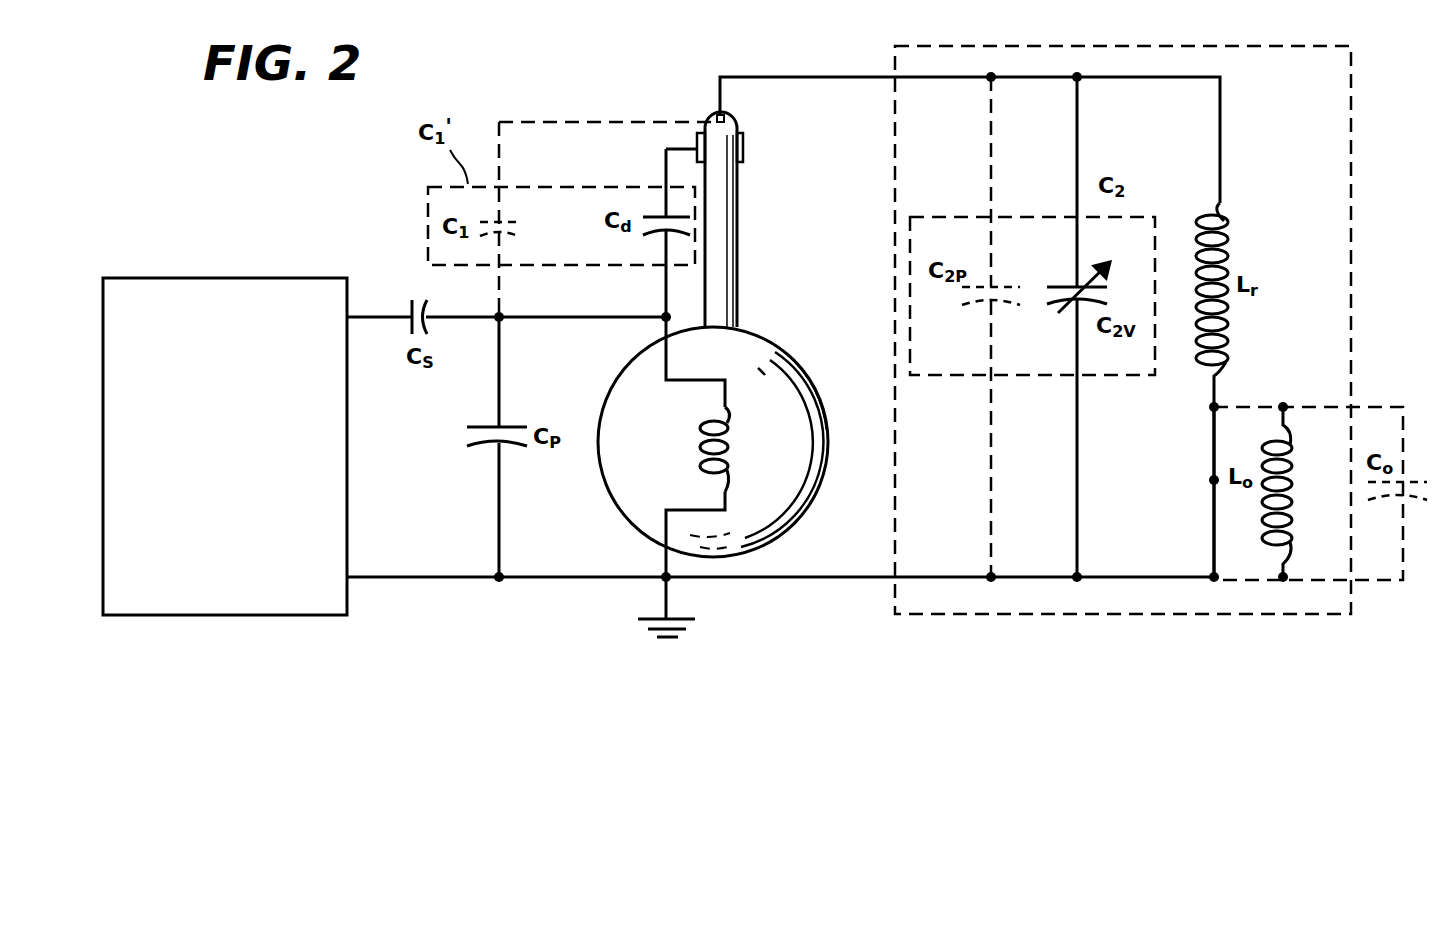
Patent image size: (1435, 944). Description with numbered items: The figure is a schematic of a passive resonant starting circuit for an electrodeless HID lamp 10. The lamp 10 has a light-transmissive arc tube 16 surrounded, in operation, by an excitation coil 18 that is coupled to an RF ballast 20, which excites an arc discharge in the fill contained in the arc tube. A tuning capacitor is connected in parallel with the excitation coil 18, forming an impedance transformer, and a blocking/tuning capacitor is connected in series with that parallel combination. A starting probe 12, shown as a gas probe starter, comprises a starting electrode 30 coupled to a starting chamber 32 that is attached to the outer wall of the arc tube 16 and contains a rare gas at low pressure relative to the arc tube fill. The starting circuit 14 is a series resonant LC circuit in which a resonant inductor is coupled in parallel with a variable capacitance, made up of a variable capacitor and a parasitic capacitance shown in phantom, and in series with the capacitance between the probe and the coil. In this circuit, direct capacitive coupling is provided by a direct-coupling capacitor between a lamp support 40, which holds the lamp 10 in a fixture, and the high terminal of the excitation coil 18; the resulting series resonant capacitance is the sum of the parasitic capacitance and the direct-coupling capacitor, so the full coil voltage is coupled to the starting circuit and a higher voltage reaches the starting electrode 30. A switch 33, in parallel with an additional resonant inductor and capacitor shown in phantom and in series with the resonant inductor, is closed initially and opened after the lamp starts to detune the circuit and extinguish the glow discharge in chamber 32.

The electrodeless HID lamp 10 is at (777, 500).
The starting probe 12 is at (772, 154).
The starting circuit 14 is at (1098, 46).
The arc tube 16 is at (803, 365).
The excitation coil 18 is at (700, 449).
The RF ballast 20 is at (210, 501).
The starting electrode 30 is at (726, 120).
The starting chamber 32 is at (735, 273).
The switch 33 is at (1207, 486).
The lamp support 40 is at (744, 153).